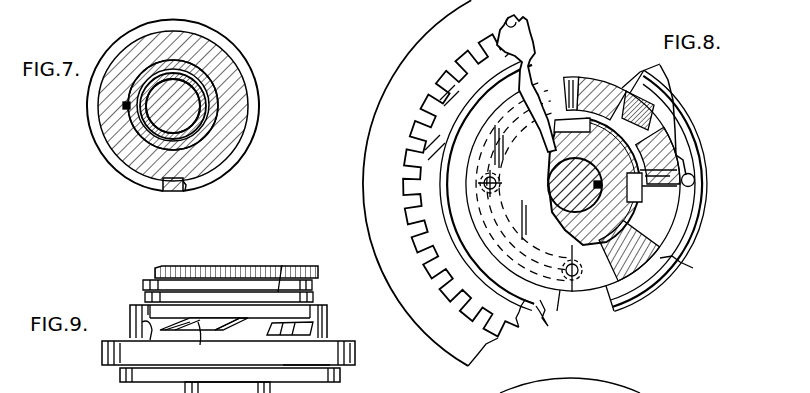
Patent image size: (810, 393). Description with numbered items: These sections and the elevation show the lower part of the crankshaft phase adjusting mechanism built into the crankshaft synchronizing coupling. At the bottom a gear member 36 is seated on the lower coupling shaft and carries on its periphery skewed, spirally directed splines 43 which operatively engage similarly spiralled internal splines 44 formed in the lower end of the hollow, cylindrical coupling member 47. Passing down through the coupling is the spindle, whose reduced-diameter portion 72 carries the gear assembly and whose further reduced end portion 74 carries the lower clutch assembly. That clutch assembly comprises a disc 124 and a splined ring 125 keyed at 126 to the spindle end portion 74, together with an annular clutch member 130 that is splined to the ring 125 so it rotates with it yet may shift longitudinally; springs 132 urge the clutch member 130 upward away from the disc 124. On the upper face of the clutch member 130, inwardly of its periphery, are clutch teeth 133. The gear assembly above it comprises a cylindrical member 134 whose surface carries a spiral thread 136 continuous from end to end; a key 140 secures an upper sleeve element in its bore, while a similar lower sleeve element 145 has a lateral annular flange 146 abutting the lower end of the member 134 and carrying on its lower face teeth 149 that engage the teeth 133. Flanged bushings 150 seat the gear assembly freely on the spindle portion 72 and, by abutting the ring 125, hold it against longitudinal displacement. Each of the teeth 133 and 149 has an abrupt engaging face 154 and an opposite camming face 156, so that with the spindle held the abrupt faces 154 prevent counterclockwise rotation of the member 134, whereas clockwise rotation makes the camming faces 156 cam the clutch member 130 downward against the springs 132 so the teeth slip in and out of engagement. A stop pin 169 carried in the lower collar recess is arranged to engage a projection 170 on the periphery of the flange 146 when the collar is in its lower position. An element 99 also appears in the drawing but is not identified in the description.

In FIG. 8, the gear member 36 is at (528, 43).
In FIG. 8, the spiral gear teeth or splines 43 is at (517, 21).
In FIG. 8, the spiral gear teeth or splines 44 is at (425, 118).
In FIG. 8, the coupling member 47 is at (405, 82).
In FIG. 7, the spindle portion of reduced diameter 72 is at (192, 100).
In FIG. 8, the spindle end portion 74 is at (550, 188).
In FIG. 8, the housing wall 99 is at (523, 385).
In FIG. 8, the disc 124 is at (556, 290).
In FIG. 9, the disc 124 is at (340, 376).
In FIG. 8, the splined ring 125 is at (553, 158).
In FIG. 8, the key 126 is at (565, 226).
In FIG. 8, the annular clutch member 130 is at (616, 312).
In FIG. 9, the annular clutch member 130 is at (355, 352).
In FIG. 8, the springs 132 is at (568, 258).
In FIG. 8, the clutch teeth or lugs 133 is at (600, 95).
In FIG. 9, the clutch teeth or lugs 133 is at (230, 336).
In FIG. 7, the cylindrical member 134 is at (210, 157).
In FIG. 9, the cylindrical member 134 is at (218, 265).
In FIG. 7, the spiral thread 136 is at (203, 184).
In FIG. 9, the spiral thread 136 is at (278, 270).
In FIG. 7, the key 140 is at (124, 108).
In FIG. 7, the sleeve element 145 is at (203, 128).
In FIG. 8, the annular flange 146 is at (570, 82).
In FIG. 9, the annular flange 146 is at (322, 302).
In FIG. 8, the clutch teeth or lugs 149 is at (630, 110).
In FIG. 9, the clutch teeth or lugs 149 is at (323, 322).
In FIG. 7, the flanged bushings 150 is at (202, 125).
In FIG. 9, the abrupt engaging face 154 is at (150, 340).
In FIG. 9, the camming face 156 is at (200, 348).
In FIG. 8, the stop pin 169 is at (695, 180).
In FIG. 8, the projection 170 is at (680, 160).